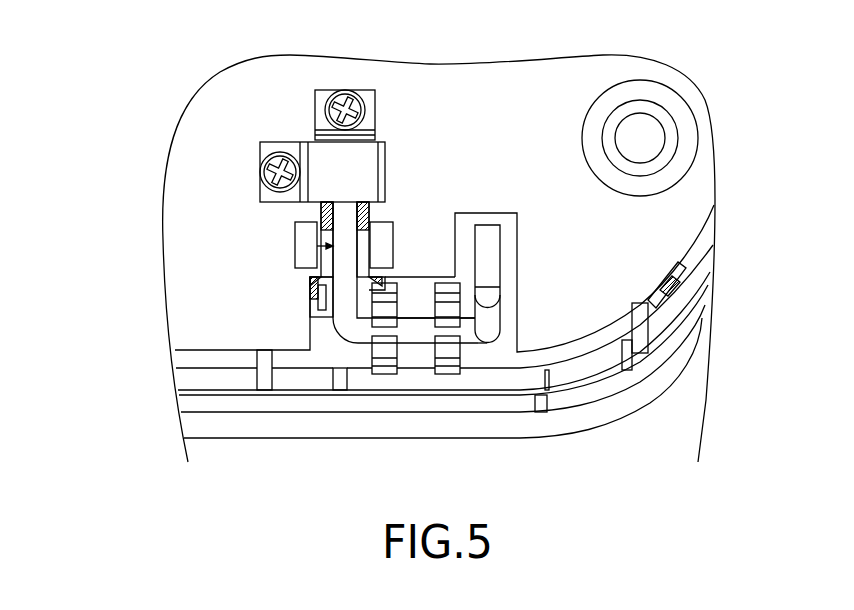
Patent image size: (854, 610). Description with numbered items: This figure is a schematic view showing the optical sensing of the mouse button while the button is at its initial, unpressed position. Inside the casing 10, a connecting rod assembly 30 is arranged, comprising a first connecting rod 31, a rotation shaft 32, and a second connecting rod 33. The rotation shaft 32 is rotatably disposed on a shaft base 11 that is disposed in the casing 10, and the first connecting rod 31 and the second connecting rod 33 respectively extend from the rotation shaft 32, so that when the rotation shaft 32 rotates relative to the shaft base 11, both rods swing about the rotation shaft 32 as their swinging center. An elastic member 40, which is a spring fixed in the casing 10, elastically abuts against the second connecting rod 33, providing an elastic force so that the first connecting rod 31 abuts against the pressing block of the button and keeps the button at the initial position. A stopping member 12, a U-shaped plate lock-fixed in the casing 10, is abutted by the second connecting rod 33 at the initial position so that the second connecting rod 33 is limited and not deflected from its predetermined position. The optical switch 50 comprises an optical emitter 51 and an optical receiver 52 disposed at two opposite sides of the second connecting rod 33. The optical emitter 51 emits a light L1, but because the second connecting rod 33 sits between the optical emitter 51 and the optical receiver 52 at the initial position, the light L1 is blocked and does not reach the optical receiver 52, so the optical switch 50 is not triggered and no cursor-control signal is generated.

The casing 10 is at (303, 427).
The shaft base 11 is at (446, 374).
The stopping member 12 is at (373, 162).
The connecting rod assembly 30 is at (513, 292).
The first connecting rod 31 is at (488, 323).
The rotation shaft 32 is at (407, 337).
The second connecting rod 33 is at (342, 298).
The elastic member 40 is at (358, 235).
The optical switch 50 is at (227, 239).
The optical emitter 51 is at (305, 236).
The optical receiver 52 is at (322, 222).
The light L1 is at (318, 246).